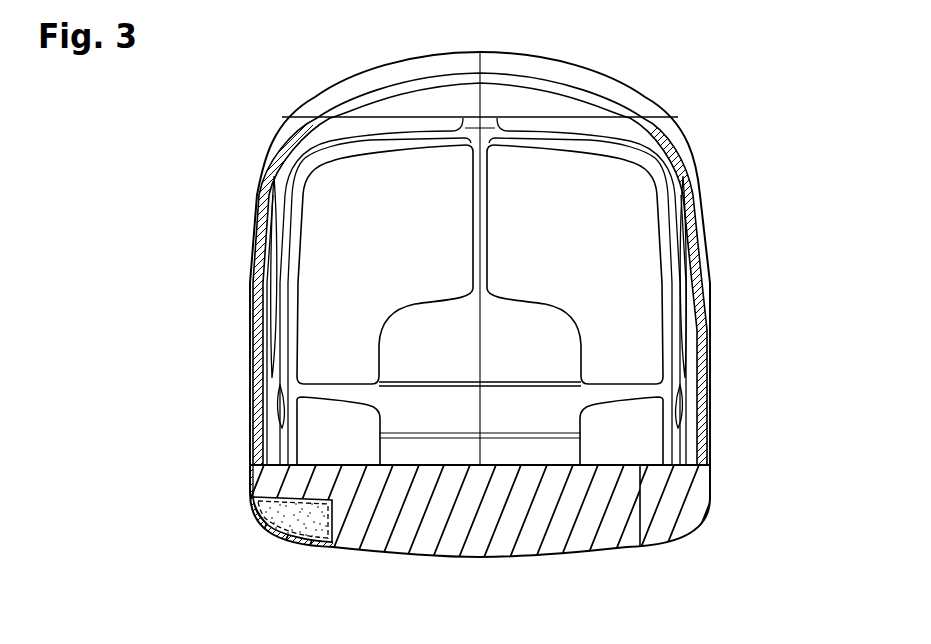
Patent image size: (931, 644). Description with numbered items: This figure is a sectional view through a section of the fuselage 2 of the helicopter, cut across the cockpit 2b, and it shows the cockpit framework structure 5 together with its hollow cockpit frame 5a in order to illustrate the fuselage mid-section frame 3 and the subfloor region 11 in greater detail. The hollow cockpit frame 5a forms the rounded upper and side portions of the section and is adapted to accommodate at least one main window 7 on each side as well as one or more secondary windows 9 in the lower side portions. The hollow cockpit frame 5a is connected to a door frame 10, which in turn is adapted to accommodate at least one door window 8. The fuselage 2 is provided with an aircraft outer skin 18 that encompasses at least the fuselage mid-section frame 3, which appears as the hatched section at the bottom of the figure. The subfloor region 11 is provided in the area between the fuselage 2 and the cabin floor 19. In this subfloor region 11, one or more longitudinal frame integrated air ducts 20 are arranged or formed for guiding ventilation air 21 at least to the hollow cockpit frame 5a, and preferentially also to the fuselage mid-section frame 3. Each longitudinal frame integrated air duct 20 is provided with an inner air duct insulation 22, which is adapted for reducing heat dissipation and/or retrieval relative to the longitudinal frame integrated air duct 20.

The fuselage 2 is at (594, 83).
The cockpit 2b is at (596, 312).
The fuselage mid-section frame 3 is at (672, 507).
The framework structure 5 is at (436, 333).
The hollow cockpit frame 5a is at (298, 265).
The main window 7 is at (333, 200).
The door window 8 is at (277, 313).
The secondary window 9 is at (337, 440).
The door frame 10 is at (266, 333).
The subfloor region 11 is at (414, 562).
The aircraft outer skin 18 is at (712, 372).
The cabin floor 19 is at (609, 459).
The longitudinal frame integrated air duct 20 is at (260, 508).
The ventilation air 21 is at (295, 506).
The inner air duct insulation 22 is at (282, 534).